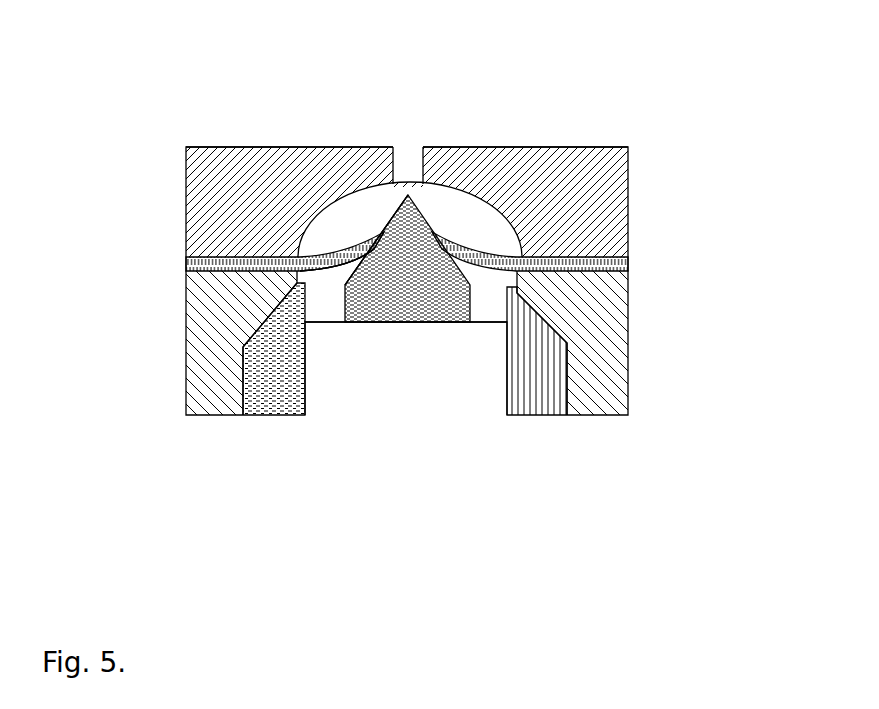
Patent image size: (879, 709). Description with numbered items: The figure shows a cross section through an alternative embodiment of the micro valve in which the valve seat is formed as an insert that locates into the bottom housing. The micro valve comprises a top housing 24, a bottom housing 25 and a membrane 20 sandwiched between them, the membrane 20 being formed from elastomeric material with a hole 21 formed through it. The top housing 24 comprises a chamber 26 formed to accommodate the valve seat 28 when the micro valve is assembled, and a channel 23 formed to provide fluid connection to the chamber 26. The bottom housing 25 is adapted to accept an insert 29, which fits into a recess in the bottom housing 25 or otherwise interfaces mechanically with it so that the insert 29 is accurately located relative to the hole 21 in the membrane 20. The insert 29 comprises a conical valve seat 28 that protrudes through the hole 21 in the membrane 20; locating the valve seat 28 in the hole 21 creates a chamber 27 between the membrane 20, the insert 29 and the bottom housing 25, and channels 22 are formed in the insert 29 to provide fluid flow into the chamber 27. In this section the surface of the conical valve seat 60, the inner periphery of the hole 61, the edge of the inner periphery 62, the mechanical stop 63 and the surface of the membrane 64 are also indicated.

The membrane 20 is at (184, 262).
The hole 21 is at (384, 218).
The channels 22 is at (482, 327).
The channel 23 is at (409, 123).
The top housing 24 is at (184, 145).
The bottom housing 25 is at (632, 348).
The chamber 26 is at (488, 212).
The chamber 27 is at (336, 273).
The valve seat 28 is at (560, 256).
The insert 29 is at (545, 417).
The surface of the conical valve seat 60 is at (431, 231).
The inner periphery of the hole 61 is at (382, 237).
The edge of the inner periphery 62 is at (385, 248).
The mechanical stop 63 is at (348, 298).
The surface of the membrane 64 is at (363, 264).